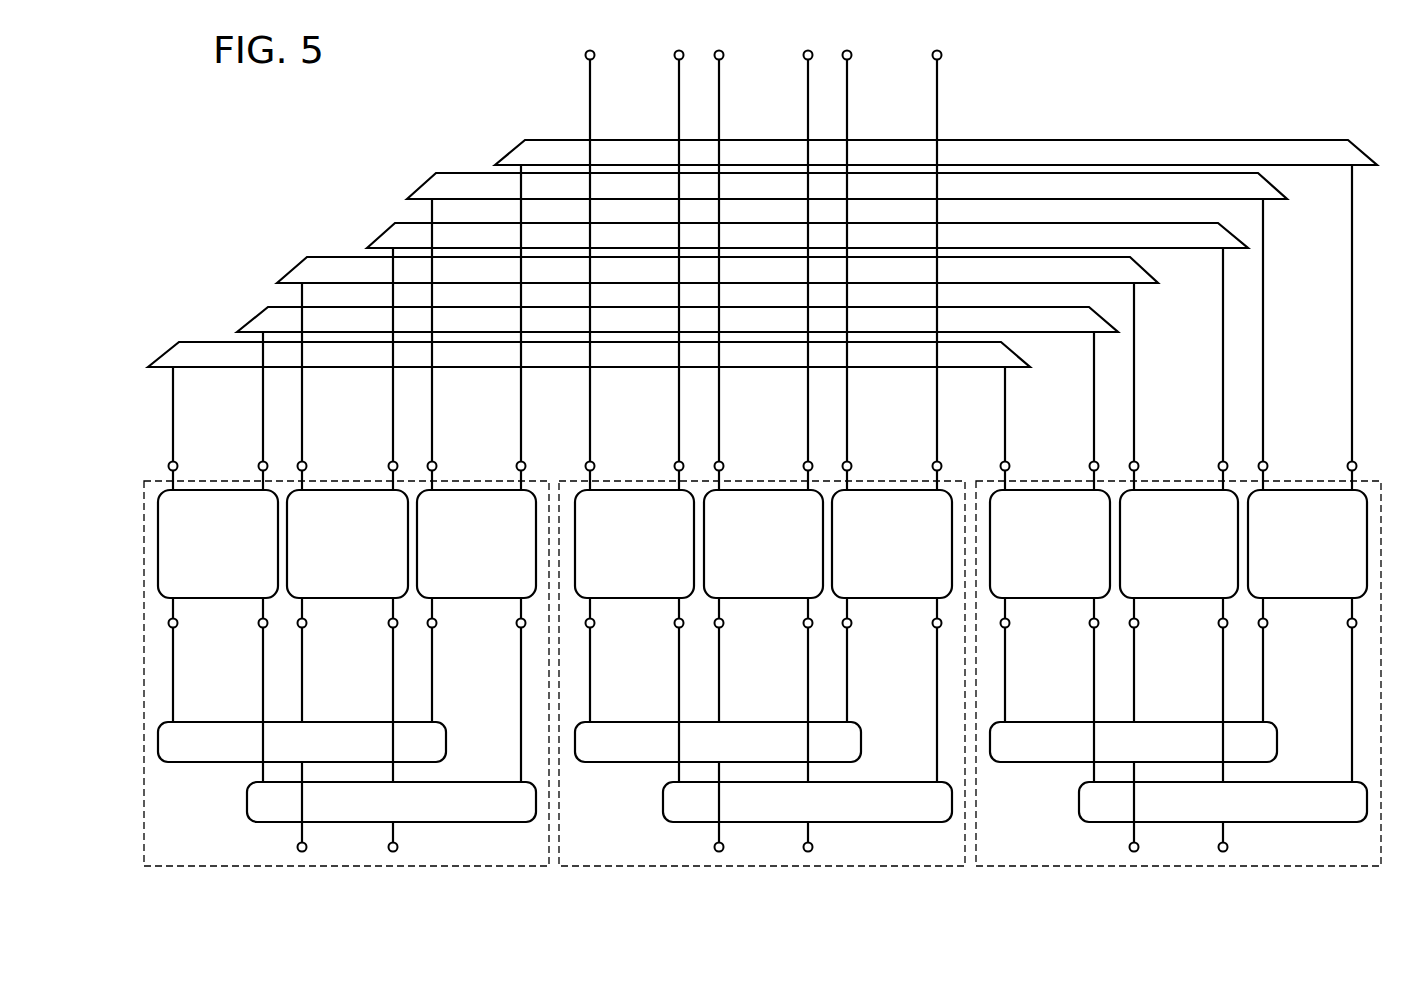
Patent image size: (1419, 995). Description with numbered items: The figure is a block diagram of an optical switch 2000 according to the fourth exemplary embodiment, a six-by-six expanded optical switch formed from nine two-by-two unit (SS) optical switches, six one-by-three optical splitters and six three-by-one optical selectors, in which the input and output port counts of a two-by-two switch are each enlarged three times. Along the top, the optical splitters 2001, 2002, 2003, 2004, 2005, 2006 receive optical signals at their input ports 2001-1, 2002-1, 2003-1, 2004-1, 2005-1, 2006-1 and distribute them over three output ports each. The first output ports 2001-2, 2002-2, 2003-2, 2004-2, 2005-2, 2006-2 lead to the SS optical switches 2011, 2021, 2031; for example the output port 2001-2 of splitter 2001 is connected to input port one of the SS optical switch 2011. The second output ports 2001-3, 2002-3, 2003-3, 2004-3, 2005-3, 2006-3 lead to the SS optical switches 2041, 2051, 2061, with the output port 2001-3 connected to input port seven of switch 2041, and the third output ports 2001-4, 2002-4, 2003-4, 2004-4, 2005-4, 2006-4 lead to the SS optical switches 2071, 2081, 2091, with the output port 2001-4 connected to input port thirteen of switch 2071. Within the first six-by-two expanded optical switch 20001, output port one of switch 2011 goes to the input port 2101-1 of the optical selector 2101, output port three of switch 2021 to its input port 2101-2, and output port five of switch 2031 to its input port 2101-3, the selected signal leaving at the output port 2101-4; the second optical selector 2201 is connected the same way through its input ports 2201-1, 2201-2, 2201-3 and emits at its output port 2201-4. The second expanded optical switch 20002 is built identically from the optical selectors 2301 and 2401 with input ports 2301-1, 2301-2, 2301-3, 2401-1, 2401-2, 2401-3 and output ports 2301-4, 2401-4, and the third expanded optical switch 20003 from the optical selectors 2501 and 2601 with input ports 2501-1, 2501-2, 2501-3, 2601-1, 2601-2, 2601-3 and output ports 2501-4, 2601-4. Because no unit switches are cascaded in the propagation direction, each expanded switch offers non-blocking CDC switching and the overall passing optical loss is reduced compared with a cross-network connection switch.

The optical switch 2000 is at (1093, 113).
The 1×3 optical splitter 2001 is at (589, 354).
The 1×3 optical splitter 2002 is at (677, 319).
The 1×3 optical splitter 2003 is at (717, 270).
The 1×3 optical splitter 2004 is at (807, 235).
The 1×3 optical splitter 2005 is at (847, 186).
The 1×3 optical splitter 2006 is at (936, 152).
The input port of optical splitter 2001 2001-1 is at (590, 86).
The input port of optical splitter 2002 2002-1 is at (680, 110).
The input port of optical splitter 2003 2003-1 is at (743, 128).
The input port of optical splitter 2004 2004-1 is at (808, 90).
The input port of optical splitter 2005 2005-1 is at (847, 113).
The input port of optical splitter 2006 2006-1 is at (937, 112).
The output port of optical splitter 2001 2001-2 is at (173, 452).
The output port of optical splitter 2002 2002-2 is at (263, 413).
The output port of optical splitter 2003 2003-2 is at (302, 452).
The output port of optical splitter 2004 2004-2 is at (393, 413).
The output port of optical splitter 2005 2005-2 is at (432, 452).
The output port of optical splitter 2006 2006-2 is at (521, 413).
The output port of optical splitter 2001 2001-3 is at (590, 452).
The output port of optical splitter 2002 2002-3 is at (679, 413).
The output port of optical splitter 2003 2003-3 is at (719, 452).
The output port of optical splitter 2004 2004-3 is at (808, 413).
The output port of optical splitter 2005 2005-3 is at (847, 452).
The output port of optical splitter 2006 2006-3 is at (937, 413).
The output port of optical splitter 2001 2001-4 is at (1005, 452).
The output port of optical splitter 2002 2002-4 is at (1094, 413).
The output port of optical splitter 2003 2003-4 is at (1134, 452).
The output port of optical splitter 2004 2004-4 is at (1223, 413).
The output port of optical splitter 2005 2005-4 is at (1263, 452).
The output port of optical splitter 2006 2006-4 is at (1352, 413).
The 2×2 SS optical switch 2011 is at (218, 544).
The 2×2 SS optical switch 2021 is at (347, 544).
The 2×2 SS optical switch 2031 is at (476, 544).
The 2×2 SS optical switch 2041 is at (634, 544).
The 2×2 SS optical switch 2051 is at (763, 544).
The 2×2 SS optical switch 2061 is at (892, 544).
The 2×2 SS optical switch 2071 is at (1050, 544).
The 2×2 SS optical switch 2081 is at (1179, 544).
The 2×2 SS optical switch 2091 is at (1307, 544).
The 3×1 optical selector 2101 is at (302, 742).
The 3×1 optical selector 2201 is at (391, 802).
The 3×1 optical selector 2301 is at (718, 742).
The 3×1 optical selector 2401 is at (807, 802).
The 3×1 optical selector 2501 is at (1133, 742).
The 3×1 optical selector 2601 is at (1223, 802).
The input port of optical selector 2101 2101-1 is at (173, 705).
The input port of optical selector 2101 2101-2 is at (302, 705).
The input port of optical selector 2101 2101-3 is at (432, 705).
The output port of optical selector 2101 2101-4 is at (297, 847).
The input port of optical selector 2201 2201-1 is at (263, 665).
The input port of optical selector 2201 2201-2 is at (393, 665).
The input port of optical selector 2201 2201-3 is at (521, 665).
The output port of optical selector 2201 2201-4 is at (398, 845).
The input port of optical selector 2301 2301-1 is at (590, 705).
The input port of optical selector 2301 2301-2 is at (719, 705).
The input port of optical selector 2301 2301-3 is at (847, 705).
The output port of optical selector 2301 2301-4 is at (714, 847).
The input port of optical selector 2401 2401-1 is at (679, 665).
The input port of optical selector 2401 2401-2 is at (808, 665).
The input port of optical selector 2401 2401-3 is at (937, 665).
The output port of optical selector 2401 2401-4 is at (813, 845).
The input port of optical selector 2501 2501-1 is at (1005, 705).
The input port of optical selector 2501 2501-2 is at (1134, 705).
The input port of optical selector 2501 2501-3 is at (1263, 705).
The output port of optical selector 2501 2501-4 is at (1129, 847).
The input port of optical selector 2601 2601-1 is at (1094, 665).
The input port of optical selector 2601 2601-2 is at (1223, 665).
The input port of optical selector 2601 2601-3 is at (1352, 665).
The output port of optical selector 2601 2601-4 is at (1228, 845).
The 6×2 expanded optical switch 20001 is at (552, 465).
The 6×2 expanded optical switch 20002 is at (968, 465).
The 6×2 expanded optical switch 20003 is at (1384, 465).